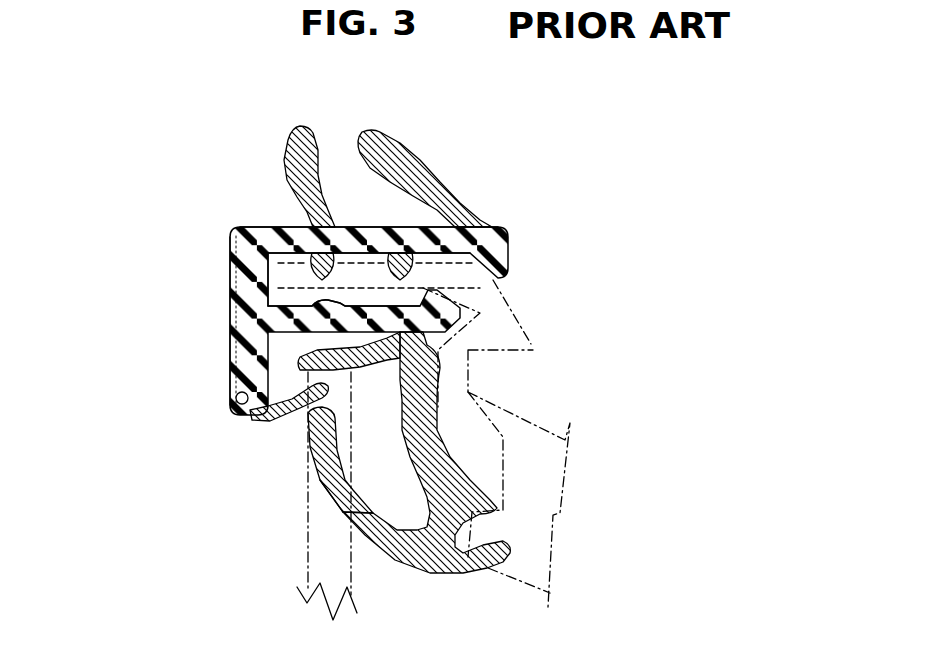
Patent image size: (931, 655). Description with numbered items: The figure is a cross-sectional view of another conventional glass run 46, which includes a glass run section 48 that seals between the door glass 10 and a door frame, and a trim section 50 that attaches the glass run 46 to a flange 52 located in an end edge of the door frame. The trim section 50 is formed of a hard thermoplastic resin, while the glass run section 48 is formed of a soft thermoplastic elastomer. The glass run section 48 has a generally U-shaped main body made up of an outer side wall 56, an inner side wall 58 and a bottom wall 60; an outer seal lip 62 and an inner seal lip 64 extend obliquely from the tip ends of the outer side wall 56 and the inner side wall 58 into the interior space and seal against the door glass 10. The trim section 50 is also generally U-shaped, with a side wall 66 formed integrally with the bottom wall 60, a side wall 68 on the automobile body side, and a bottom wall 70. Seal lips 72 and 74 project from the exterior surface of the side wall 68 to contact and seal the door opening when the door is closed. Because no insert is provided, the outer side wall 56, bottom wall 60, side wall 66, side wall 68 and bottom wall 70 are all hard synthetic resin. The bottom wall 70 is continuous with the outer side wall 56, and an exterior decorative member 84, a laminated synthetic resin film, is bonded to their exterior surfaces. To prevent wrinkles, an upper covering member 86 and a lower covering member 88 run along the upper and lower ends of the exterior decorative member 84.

The door glass 10 is at (298, 538).
The glass run 46 is at (518, 238).
The glass run section 48 is at (462, 462).
The trim section 50 is at (228, 275).
The flange 52 is at (371, 277).
The outer side wall 56 is at (255, 410).
The inner side wall 58 is at (422, 407).
The bottom wall 60 is at (335, 320).
The outer seal lip 62 is at (308, 413).
The inner seal lip 64 is at (343, 485).
The side wall 66 is at (350, 305).
The side wall 68 is at (358, 227).
The bottom wall 70 is at (263, 249).
The seal lip 72 is at (290, 150).
The seal lip 74 is at (427, 168).
The exterior decorative member 84 is at (230, 291).
The upper covering member 86 is at (233, 250).
The lower covering member 88 is at (262, 407).